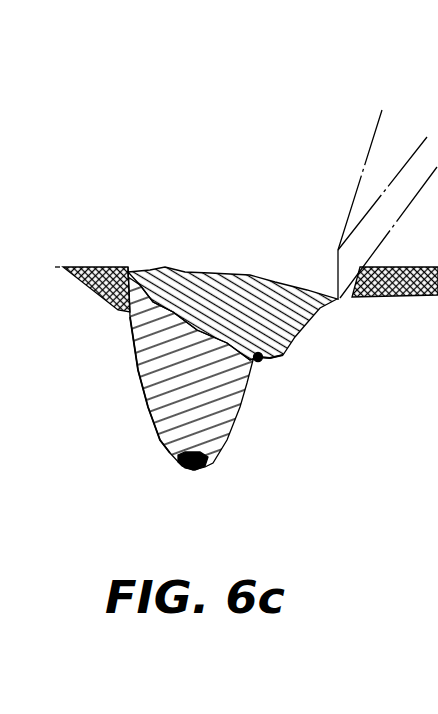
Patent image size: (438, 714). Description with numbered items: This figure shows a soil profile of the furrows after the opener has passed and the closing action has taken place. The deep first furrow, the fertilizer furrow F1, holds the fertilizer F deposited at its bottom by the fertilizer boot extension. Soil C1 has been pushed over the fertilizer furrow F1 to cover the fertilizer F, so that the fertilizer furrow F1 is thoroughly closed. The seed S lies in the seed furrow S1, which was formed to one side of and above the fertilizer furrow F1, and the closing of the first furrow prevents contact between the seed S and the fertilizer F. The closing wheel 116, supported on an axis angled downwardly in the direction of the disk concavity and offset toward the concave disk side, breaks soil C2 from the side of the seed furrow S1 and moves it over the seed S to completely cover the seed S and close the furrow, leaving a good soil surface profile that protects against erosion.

The closing wheel 116 is at (360, 173).
The soil C1 is at (148, 373).
The soil C2 is at (243, 279).
The fertilizer furrow F1 is at (160, 422).
The fertilizer F is at (185, 458).
The seed S is at (259, 362).
The seed furrow S1 is at (279, 358).